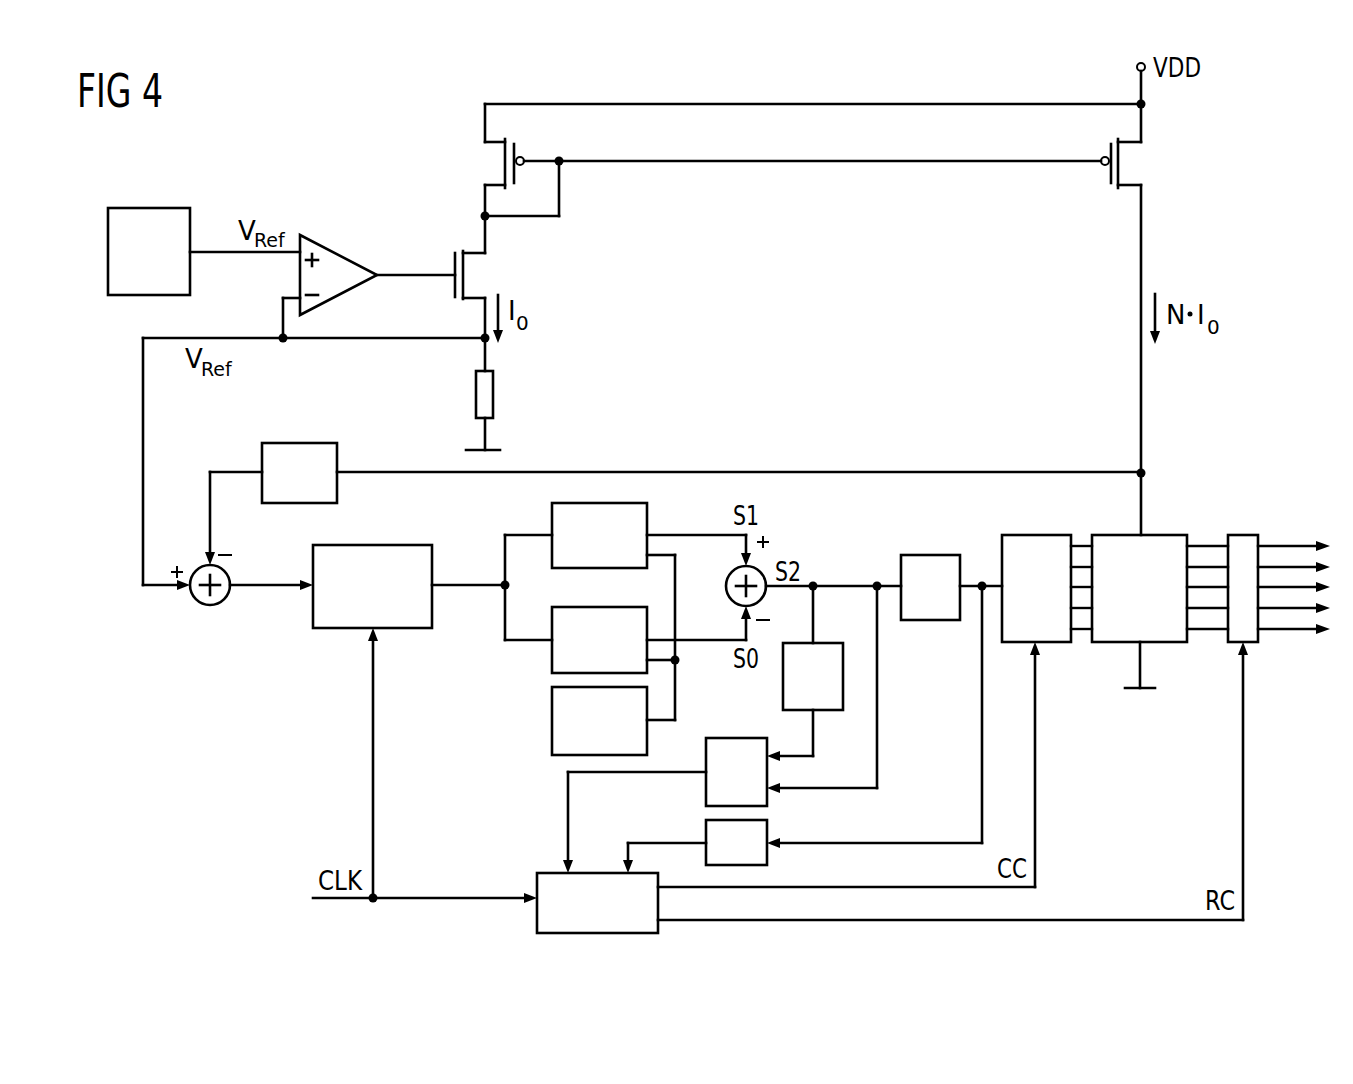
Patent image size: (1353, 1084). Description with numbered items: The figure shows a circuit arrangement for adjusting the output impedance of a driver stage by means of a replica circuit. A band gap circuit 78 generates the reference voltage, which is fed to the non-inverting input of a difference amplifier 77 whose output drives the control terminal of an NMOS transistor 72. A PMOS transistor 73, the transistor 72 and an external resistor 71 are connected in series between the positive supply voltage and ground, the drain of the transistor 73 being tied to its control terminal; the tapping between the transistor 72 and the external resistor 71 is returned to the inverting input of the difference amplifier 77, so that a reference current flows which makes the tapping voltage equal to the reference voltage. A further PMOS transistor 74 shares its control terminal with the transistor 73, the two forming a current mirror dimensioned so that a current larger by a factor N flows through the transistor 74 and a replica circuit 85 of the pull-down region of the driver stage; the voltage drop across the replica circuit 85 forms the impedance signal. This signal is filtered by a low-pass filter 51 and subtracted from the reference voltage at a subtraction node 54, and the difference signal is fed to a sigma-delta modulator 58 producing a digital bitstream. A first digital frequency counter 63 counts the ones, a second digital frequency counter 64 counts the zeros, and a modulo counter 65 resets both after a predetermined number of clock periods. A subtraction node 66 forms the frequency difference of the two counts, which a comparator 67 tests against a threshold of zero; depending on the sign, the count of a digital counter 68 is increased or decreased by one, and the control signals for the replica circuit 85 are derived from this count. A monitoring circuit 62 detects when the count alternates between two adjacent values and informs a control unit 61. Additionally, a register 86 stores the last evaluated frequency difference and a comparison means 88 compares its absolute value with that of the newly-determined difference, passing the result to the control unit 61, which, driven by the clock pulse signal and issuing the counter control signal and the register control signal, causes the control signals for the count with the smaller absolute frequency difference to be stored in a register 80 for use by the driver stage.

The band gap circuit 78 is at (165, 268).
The difference amplifier 77 is at (338, 248).
The transistor 73 is at (494, 160).
The transistor 72 is at (474, 272).
The external resistor 71 is at (476, 397).
The transistor 74 is at (1130, 161).
The low-pass filter 51 is at (313, 489).
The subtraction node 54 is at (208, 606).
The sigma-delta modulator 58 is at (385, 604).
The first digital frequency counter 63 is at (613, 552).
The second digital frequency counter 64 is at (613, 658).
The modulo counter 65 is at (613, 738).
The subtraction node 66 is at (762, 572).
The comparator 67 is at (933, 555).
The digital counter 68 is at (1049, 603).
The replica circuit 85 is at (1153, 603).
The register 80 is at (1243, 535).
The register 86 is at (828, 712).
The comparison means 88 is at (750, 787).
The monitoring circuit 62 is at (750, 857).
The control unit 61 is at (610, 918).